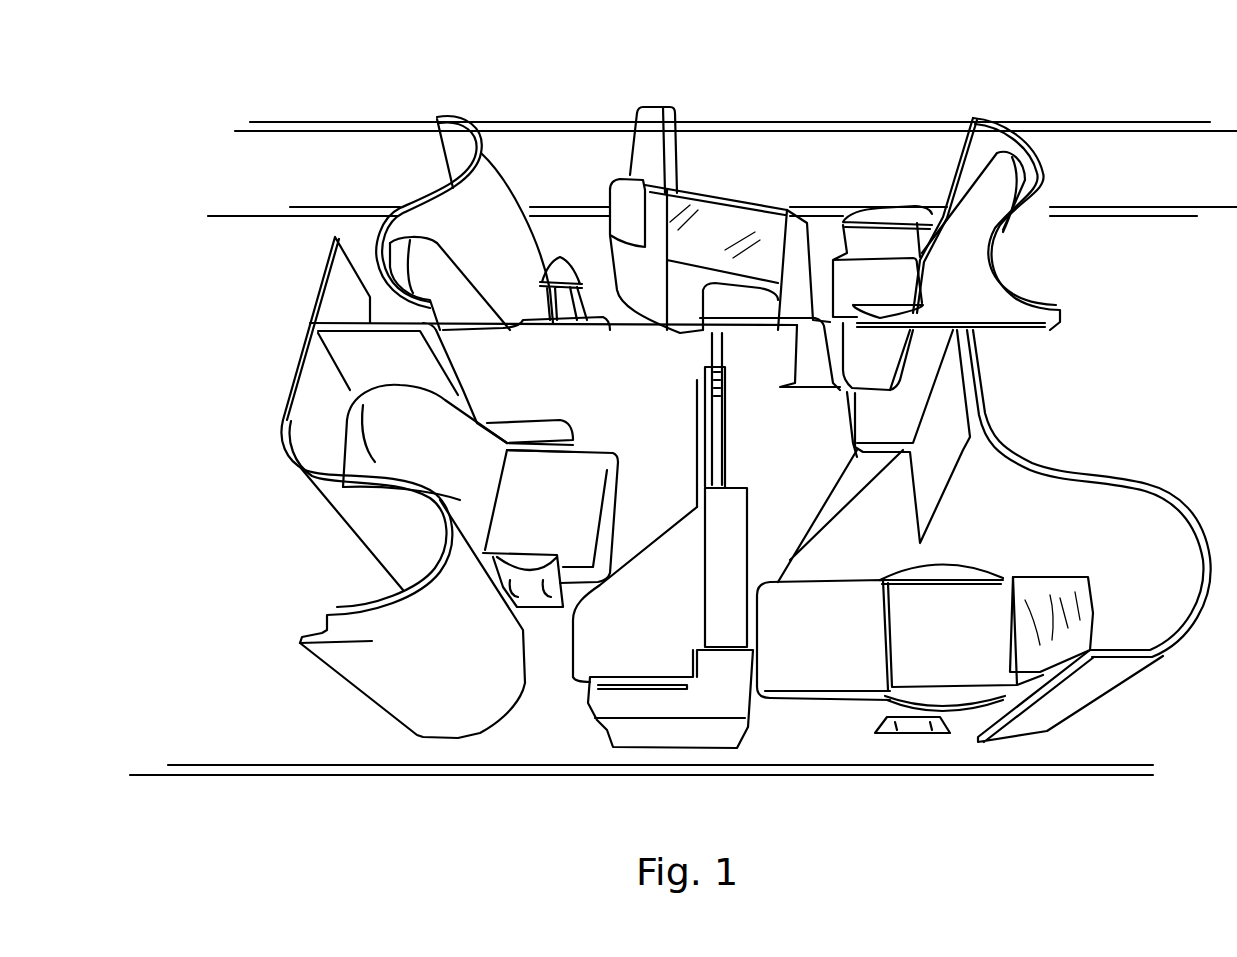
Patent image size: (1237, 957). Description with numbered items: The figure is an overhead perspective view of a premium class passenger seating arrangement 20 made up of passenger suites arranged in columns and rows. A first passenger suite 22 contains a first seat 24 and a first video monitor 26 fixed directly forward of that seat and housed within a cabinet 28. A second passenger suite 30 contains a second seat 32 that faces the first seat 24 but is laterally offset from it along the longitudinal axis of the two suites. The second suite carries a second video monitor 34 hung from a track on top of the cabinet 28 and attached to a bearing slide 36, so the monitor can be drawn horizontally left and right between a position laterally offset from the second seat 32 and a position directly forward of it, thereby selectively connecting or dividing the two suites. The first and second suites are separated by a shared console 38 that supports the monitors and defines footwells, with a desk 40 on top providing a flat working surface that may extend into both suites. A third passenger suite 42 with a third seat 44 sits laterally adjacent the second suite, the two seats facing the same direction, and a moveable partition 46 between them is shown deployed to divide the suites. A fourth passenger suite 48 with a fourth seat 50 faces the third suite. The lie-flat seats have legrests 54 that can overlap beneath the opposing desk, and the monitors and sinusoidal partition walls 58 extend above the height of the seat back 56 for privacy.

The passenger seating arrangement 20 is at (955, 100).
The first passenger suite 22 is at (1033, 581).
The first seat 24 is at (958, 660).
The first video monitor 26 is at (790, 590).
The cabinet 28 is at (723, 625).
The second passenger suite 30 is at (342, 561).
The second seat 32 is at (397, 455).
The second video monitor 34 is at (697, 417).
The bearing slide 36 is at (715, 412).
The shared console 38 is at (627, 705).
The desk 40 is at (600, 653).
The third passenger suite 42 is at (498, 279).
The third seat 44 is at (395, 268).
The moveable partition 46 is at (465, 345).
The fourth passenger suite 48 is at (1007, 330).
The fourth seat 50 is at (1000, 187).
The legrest 54 is at (847, 670).
The seat back 56 is at (345, 418).
The partition wall 58 is at (450, 190).